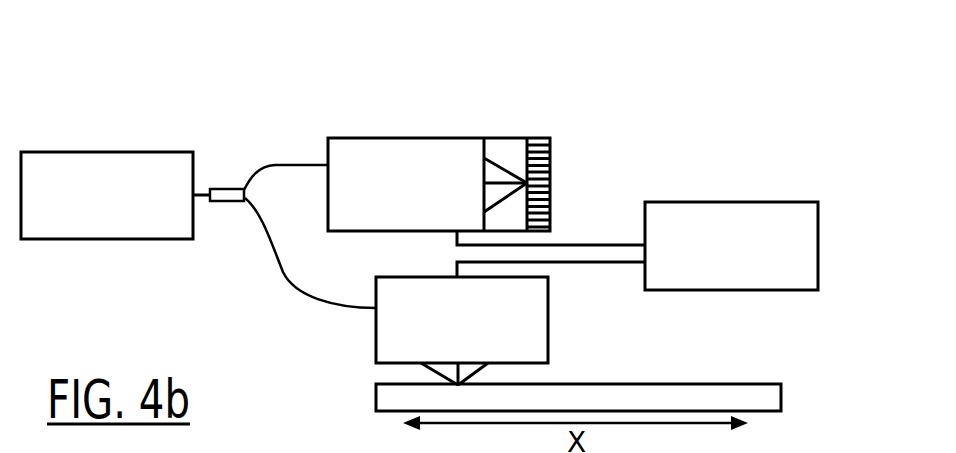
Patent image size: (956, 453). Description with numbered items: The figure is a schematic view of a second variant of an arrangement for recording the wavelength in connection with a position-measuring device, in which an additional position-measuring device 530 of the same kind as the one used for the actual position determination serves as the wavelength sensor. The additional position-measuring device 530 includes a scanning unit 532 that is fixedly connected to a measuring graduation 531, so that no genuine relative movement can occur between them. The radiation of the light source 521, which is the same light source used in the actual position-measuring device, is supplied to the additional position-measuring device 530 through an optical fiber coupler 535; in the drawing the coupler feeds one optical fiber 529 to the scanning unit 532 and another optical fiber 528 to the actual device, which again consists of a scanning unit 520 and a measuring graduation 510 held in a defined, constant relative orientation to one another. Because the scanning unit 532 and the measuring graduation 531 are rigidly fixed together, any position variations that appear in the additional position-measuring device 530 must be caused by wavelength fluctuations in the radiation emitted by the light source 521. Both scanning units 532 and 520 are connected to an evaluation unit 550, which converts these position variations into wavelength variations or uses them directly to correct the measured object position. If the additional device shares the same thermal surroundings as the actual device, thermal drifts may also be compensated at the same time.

The measuring graduation 510 is at (736, 393).
The scanning unit 520 is at (533, 310).
The light source 521 is at (70, 222).
The optical fiber 528 is at (293, 285).
The optical fiber 529 is at (253, 167).
The additional position-measuring device 530 is at (471, 126).
The measuring graduation 531 is at (540, 148).
The scanning unit 532 is at (367, 152).
The optical fiber coupler 535 is at (225, 223).
The evaluation unit 550 is at (762, 217).